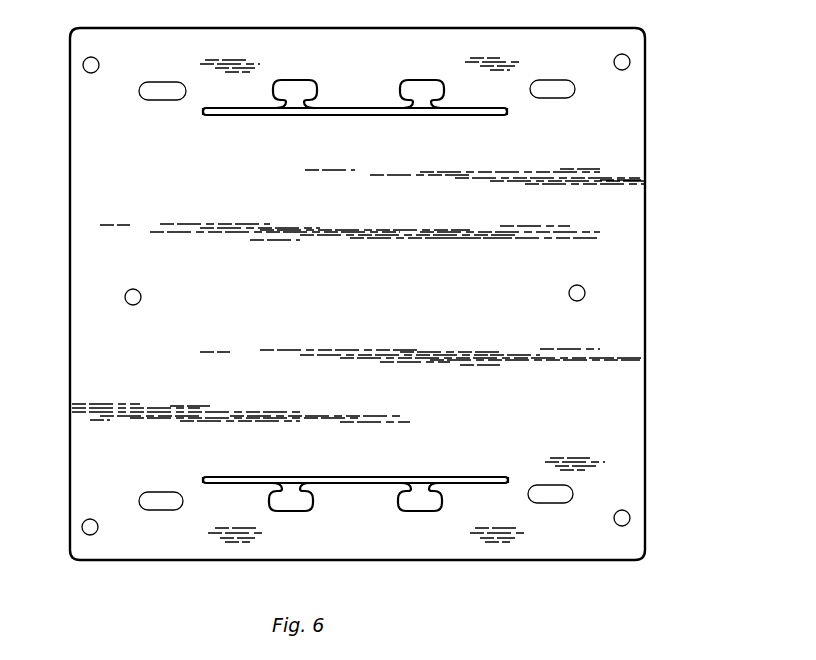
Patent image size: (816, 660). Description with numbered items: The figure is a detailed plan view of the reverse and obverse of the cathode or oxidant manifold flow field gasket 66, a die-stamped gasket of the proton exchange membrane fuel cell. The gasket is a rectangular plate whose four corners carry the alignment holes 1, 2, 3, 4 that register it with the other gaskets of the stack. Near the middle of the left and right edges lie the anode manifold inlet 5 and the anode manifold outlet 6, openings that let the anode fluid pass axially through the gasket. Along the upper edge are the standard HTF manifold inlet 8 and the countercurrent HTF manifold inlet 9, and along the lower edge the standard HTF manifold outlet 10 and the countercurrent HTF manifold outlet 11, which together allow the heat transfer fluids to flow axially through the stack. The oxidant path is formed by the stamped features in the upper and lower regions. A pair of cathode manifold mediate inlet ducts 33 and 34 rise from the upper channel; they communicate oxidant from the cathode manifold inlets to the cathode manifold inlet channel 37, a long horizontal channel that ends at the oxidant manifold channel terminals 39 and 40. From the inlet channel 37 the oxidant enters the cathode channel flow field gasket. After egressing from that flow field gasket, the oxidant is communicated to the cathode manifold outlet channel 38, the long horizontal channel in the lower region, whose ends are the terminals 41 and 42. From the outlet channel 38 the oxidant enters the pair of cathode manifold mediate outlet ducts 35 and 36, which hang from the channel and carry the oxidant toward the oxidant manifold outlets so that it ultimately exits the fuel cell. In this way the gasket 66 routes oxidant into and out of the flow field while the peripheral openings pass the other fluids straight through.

The alignment hole 1 is at (84, 66).
The alignment hole 2 is at (630, 62).
The alignment hole 3 is at (630, 516).
The alignment hole 4 is at (82, 525).
The anode manifold inlet 5 is at (127, 293).
The anode manifold outlet 6 is at (582, 289).
The standard HTF manifold inlet 8 is at (162, 88).
The countercurrent HTF manifold inlet 9 is at (550, 86).
The standard HTF manifold outlet 10 is at (550, 500).
The countercurrent HTF manifold outlet 11 is at (160, 505).
The cathode manifold mediate inlet duct 33 is at (289, 88).
The cathode manifold mediate inlet duct 34 is at (417, 88).
The cathode manifold mediate outlet duct 35 is at (421, 505).
The cathode manifold mediate outlet duct 36 is at (291, 505).
The cathode manifold inlet channel 37 is at (365, 131).
The cathode manifold outlet channel 38 is at (329, 455).
The oxidant manifold channel terminal 39 is at (203, 116).
The right end of upper rail 40 is at (508, 113).
The right end of lower rail 41 is at (507, 476).
The oxidant manifold channel terminal 42 is at (203, 478).
The cathode manifold flow field gasket 66 is at (684, 222).